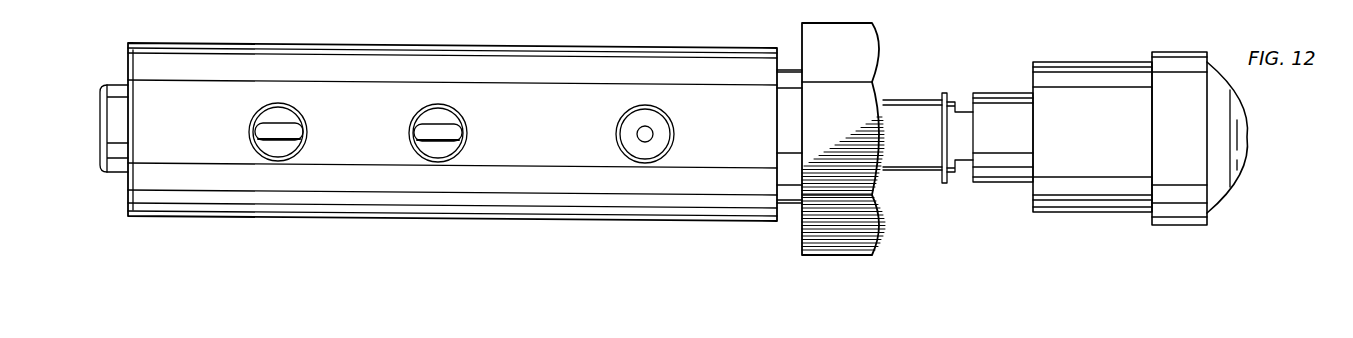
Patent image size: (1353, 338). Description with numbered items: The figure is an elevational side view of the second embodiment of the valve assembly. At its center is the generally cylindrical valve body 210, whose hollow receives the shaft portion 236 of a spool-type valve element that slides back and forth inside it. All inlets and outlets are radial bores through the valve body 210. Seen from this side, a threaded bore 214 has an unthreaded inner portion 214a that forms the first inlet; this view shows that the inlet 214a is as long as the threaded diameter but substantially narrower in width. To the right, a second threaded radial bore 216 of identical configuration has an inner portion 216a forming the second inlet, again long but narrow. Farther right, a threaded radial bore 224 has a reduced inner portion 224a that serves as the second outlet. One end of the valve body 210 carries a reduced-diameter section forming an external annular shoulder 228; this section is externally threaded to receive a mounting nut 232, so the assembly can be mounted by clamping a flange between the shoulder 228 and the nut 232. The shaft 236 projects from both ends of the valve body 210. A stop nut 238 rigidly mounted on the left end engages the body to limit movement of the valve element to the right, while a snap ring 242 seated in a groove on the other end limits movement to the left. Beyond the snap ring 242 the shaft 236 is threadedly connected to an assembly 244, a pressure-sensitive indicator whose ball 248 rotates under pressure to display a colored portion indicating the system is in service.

The valve body 210 is at (563, 66).
The threaded bore 214 is at (275, 107).
The unthreaded inner portion (first inlet) 214a is at (290, 127).
The second threaded radial bore 216 is at (433, 108).
The inner portion (second inlet) 216a is at (458, 128).
The threaded radial bore 224 is at (640, 106).
The reduced inner portion (second outlet) 224a is at (650, 131).
The external annular shoulder 228 is at (778, 218).
The mounting nut 232 is at (870, 237).
The shaft portion 236 is at (910, 115).
The stop nut 238 is at (113, 105).
The snap ring 242 is at (945, 184).
The assembly (pressure sensitive indicator) 244 is at (1093, 60).
The ball 248 is at (1243, 142).